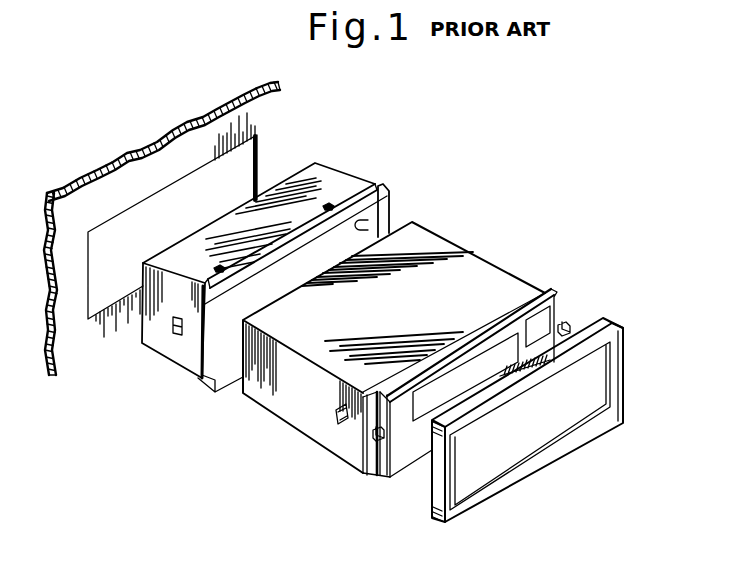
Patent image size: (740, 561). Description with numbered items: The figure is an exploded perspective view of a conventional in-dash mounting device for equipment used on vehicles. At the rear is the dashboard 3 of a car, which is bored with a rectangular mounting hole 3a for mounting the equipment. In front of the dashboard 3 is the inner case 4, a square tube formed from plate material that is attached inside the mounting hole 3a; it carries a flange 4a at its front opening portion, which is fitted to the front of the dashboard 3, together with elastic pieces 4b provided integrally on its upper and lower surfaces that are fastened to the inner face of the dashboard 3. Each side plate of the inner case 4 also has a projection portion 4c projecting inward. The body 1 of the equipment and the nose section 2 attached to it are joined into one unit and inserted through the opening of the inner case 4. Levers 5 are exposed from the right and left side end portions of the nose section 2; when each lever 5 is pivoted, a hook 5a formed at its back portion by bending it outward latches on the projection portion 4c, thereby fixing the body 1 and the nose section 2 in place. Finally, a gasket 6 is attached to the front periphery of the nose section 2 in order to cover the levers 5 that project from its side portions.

The body 1 is at (293, 403).
The nose section 2 is at (518, 313).
The dashboard 3 is at (85, 203).
The mounting hole 3a is at (147, 213).
The inner case 4 is at (302, 182).
The flange 4a is at (393, 203).
The elastic pieces 4b is at (216, 268).
The projection portion 4c is at (360, 230).
The levers 5 is at (570, 327).
The hook 5a is at (337, 418).
The gasket 6 is at (430, 490).